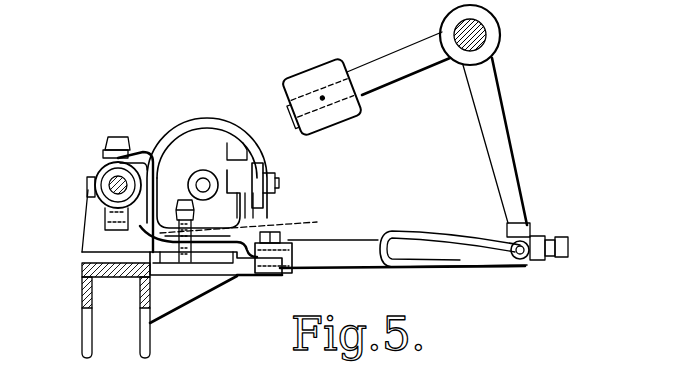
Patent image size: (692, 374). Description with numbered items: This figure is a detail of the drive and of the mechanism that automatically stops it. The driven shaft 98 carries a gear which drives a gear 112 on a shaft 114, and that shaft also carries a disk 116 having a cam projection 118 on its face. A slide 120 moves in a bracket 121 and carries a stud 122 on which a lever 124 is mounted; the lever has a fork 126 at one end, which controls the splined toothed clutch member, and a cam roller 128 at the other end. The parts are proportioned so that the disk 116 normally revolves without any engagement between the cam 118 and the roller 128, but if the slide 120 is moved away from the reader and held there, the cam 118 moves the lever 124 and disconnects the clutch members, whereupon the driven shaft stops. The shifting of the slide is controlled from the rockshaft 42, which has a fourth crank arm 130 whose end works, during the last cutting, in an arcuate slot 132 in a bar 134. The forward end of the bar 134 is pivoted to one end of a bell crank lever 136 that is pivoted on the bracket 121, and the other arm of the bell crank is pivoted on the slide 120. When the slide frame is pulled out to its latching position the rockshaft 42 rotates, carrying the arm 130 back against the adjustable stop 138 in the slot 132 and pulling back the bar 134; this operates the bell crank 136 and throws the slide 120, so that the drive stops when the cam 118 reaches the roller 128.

The rockshaft 42 is at (488, 37).
The shaft 98 is at (110, 180).
The gear 112 is at (182, 120).
The shaft 114 is at (205, 183).
The disk 116 is at (205, 130).
The cam projection 118 is at (237, 151).
The slide 120 is at (203, 264).
The bracket 121 is at (173, 269).
The stud 122 is at (256, 223).
The lever 124 is at (250, 212).
The fork 126 is at (138, 153).
The cam roller 128 is at (263, 174).
The fourth crank arm 130 is at (498, 152).
The arcuate slot 132 is at (458, 255).
The bar 134 is at (360, 260).
The bell crank lever 136 is at (252, 270).
The adjustable stop 138 is at (568, 244).